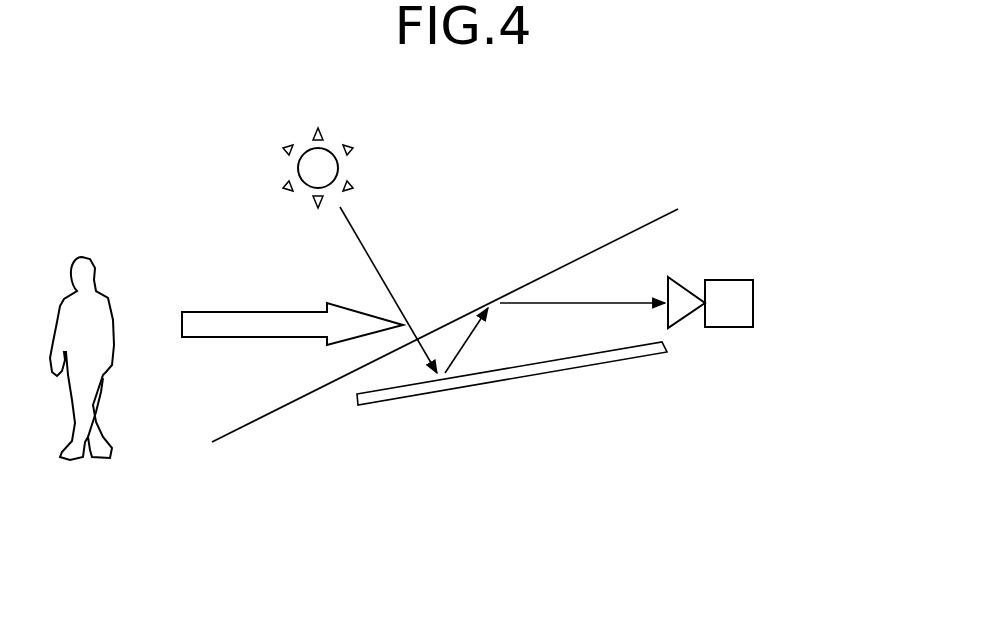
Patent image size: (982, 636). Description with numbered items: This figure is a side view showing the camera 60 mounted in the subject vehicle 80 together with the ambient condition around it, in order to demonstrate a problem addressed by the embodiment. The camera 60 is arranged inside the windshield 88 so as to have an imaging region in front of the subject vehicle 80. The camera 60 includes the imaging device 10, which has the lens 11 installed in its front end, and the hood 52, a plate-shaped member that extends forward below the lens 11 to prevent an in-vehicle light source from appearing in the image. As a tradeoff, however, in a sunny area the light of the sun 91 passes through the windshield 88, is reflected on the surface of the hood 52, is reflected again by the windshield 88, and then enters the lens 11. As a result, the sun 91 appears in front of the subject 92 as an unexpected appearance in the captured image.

The subject 92 is at (92, 260).
The sun 91 is at (326, 158).
The windshield 88 is at (630, 233).
The hood 52 is at (498, 381).
The lens 11 is at (668, 282).
The imaging device 10 is at (753, 312).
The camera 60 is at (707, 328).
The subject vehicle 80 is at (870, 484).